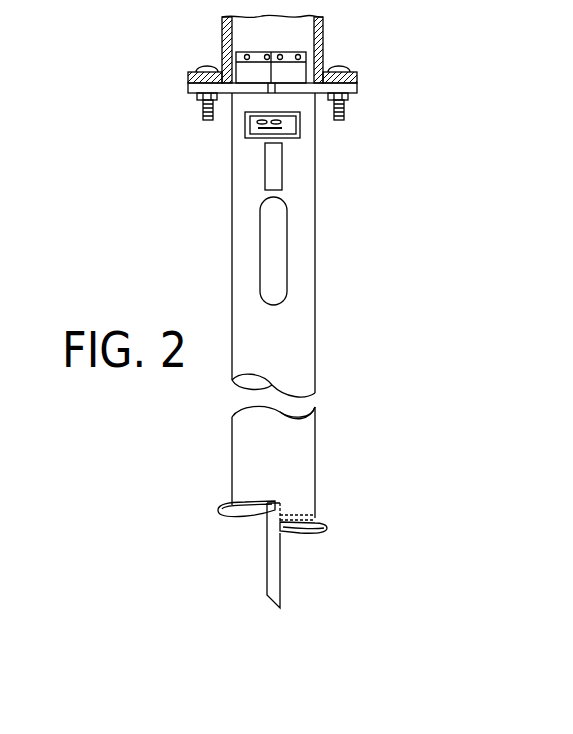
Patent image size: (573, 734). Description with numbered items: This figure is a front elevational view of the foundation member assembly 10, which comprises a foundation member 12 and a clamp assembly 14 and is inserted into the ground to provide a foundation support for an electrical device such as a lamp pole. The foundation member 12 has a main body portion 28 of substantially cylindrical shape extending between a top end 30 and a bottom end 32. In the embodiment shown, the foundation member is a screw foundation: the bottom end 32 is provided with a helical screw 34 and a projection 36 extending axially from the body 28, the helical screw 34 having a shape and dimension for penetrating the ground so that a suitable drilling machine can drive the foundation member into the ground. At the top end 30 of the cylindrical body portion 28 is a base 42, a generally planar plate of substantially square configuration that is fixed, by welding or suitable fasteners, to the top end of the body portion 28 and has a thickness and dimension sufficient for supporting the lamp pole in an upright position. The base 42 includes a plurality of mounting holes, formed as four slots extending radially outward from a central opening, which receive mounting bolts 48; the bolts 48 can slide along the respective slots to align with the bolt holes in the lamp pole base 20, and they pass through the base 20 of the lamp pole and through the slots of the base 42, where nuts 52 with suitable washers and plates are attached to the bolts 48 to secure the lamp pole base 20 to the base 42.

The foundation member assembly 10 is at (368, 254).
The foundation member 12 is at (326, 330).
The clamp assembly 14 is at (323, 30).
The base 20 is at (222, 38).
The main body portion 28 is at (300, 202).
The top end 30 is at (316, 93).
The bottom end 32 is at (315, 518).
The helical screw 34 is at (327, 525).
The projection 36 is at (282, 590).
The base 42 is at (357, 90).
The mounting bolts 48 is at (203, 112).
The nut 52 is at (197, 96).